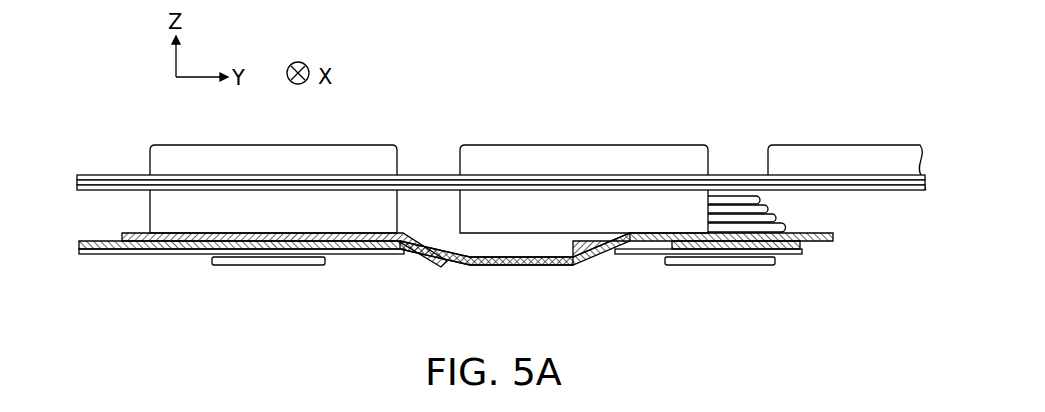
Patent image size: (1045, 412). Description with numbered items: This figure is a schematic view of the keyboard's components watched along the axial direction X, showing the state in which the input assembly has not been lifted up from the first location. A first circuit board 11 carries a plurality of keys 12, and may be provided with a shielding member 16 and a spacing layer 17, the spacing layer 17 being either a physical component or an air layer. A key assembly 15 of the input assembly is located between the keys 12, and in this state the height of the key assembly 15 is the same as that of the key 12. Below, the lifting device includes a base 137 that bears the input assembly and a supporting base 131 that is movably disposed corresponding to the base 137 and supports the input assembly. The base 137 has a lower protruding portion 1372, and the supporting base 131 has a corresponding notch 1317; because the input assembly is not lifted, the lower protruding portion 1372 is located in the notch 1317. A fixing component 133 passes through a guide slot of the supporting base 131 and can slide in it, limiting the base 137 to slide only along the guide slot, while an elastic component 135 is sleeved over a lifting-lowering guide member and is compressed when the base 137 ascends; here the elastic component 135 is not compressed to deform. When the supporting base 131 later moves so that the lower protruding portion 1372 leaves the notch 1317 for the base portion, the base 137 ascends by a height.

The first circuit board 11 is at (120, 190).
The key 12 is at (832, 145).
The key assembly 15 is at (585, 145).
The shielding member 16 is at (85, 177).
The spacing layer 17 is at (118, 183).
The supporting base 131 is at (98, 253).
The fixing component 133 is at (272, 265).
The elastic component 135 is at (735, 210).
The base 137 is at (172, 245).
The notch 1317 is at (632, 254).
The lower protruding portion 1372 is at (497, 268).